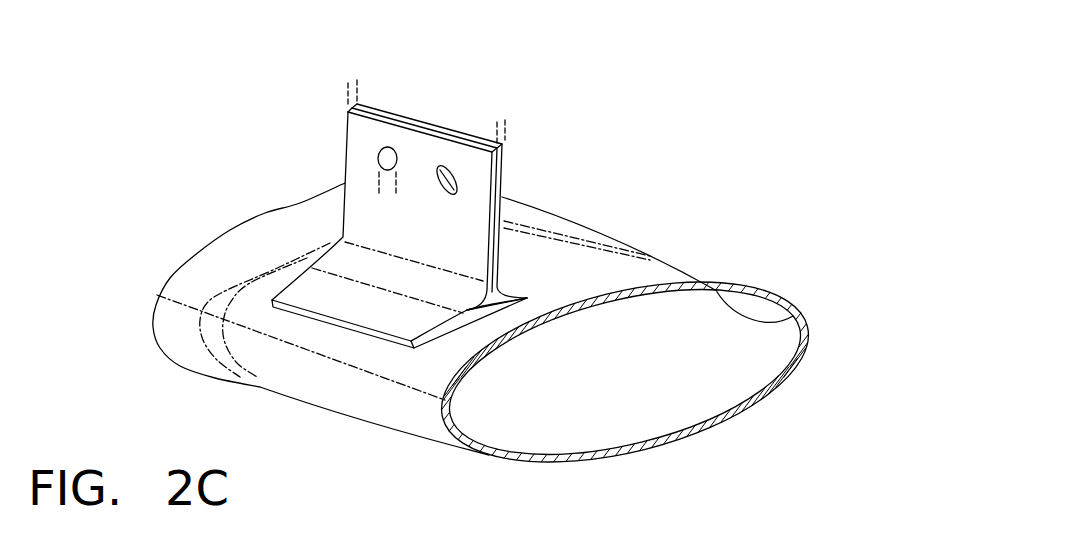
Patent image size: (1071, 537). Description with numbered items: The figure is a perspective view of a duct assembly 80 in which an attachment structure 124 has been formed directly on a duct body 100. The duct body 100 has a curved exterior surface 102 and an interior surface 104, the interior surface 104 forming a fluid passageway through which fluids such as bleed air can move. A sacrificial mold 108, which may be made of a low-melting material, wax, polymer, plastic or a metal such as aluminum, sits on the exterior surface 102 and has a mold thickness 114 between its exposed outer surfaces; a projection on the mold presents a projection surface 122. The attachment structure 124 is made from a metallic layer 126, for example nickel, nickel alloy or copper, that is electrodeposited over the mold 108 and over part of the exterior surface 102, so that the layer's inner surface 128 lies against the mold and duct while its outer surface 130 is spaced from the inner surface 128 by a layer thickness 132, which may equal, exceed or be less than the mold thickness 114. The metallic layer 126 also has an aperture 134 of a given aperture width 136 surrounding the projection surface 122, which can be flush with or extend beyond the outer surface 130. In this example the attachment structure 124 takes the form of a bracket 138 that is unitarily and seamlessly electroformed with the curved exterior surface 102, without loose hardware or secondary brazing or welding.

The duct assembly 80 is at (658, 90).
The duct body 100 is at (652, 266).
The exterior surface 102 is at (598, 264).
The interior surface 104 is at (783, 318).
The sacrificial mold 108 is at (514, 187).
The mold thickness 114 is at (468, 142).
The projection surface 122 is at (442, 170).
The attachment structure 124 is at (328, 207).
The metallic layer 126 is at (407, 318).
The inner surface 128 is at (440, 337).
The outer surface 130 is at (365, 129).
The layer thickness 132 is at (393, 73).
The aperture 134 is at (513, 142).
The aperture width 136 is at (345, 181).
The bracket 138 is at (373, 307).